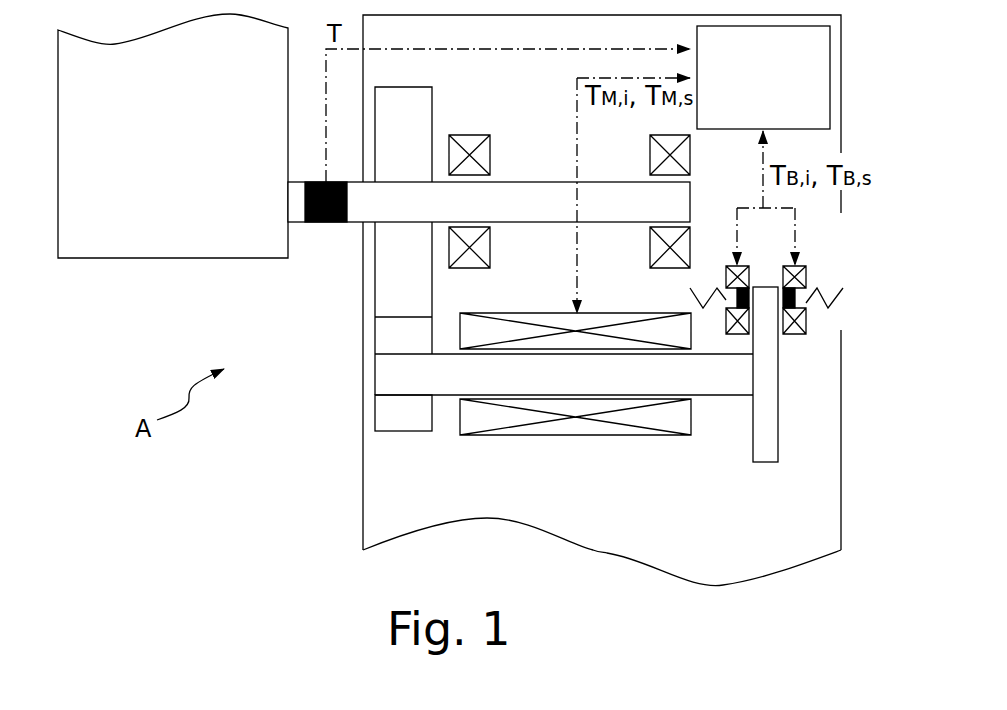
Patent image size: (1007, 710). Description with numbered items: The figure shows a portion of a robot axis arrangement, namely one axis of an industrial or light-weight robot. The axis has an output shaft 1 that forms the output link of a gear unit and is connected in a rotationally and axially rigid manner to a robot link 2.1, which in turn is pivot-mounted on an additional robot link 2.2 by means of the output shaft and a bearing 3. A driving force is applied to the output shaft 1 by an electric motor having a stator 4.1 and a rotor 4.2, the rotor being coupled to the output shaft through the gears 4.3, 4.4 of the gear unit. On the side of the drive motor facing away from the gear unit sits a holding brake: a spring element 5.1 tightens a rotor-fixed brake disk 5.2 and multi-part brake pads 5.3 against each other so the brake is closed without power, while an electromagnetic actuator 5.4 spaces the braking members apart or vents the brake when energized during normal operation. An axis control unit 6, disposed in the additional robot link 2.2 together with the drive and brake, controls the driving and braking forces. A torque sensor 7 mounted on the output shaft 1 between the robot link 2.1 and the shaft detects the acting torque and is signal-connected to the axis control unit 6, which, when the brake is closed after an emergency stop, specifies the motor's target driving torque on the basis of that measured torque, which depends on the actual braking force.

The output shaft 1 is at (498, 212).
The robot link 2.1 is at (236, 249).
The additional robot link 2.2 is at (738, 560).
The bearing 3 is at (490, 143).
The stator 4.1 is at (460, 437).
The rotor 4.2 is at (597, 387).
The gear 4.3 is at (375, 414).
The gear 4.4 is at (375, 262).
The spring element 5.1 is at (832, 303).
The brake disk 5.2 is at (778, 443).
The brake pads 5.3 is at (796, 298).
The electromagnetic actuator 5.4 is at (806, 266).
The axis control unit 6 is at (771, 99).
The torque sensor 7 is at (300, 203).